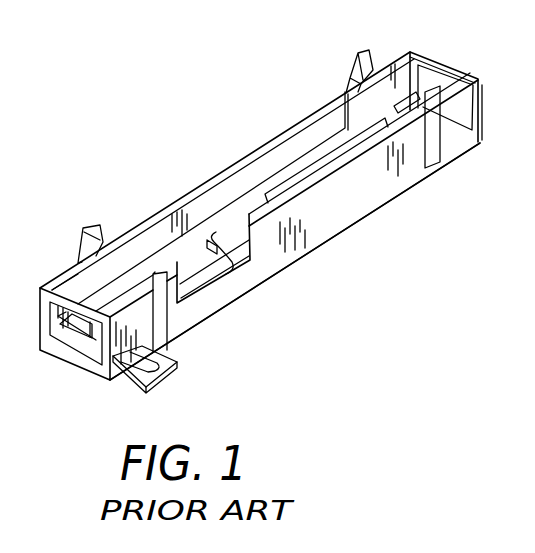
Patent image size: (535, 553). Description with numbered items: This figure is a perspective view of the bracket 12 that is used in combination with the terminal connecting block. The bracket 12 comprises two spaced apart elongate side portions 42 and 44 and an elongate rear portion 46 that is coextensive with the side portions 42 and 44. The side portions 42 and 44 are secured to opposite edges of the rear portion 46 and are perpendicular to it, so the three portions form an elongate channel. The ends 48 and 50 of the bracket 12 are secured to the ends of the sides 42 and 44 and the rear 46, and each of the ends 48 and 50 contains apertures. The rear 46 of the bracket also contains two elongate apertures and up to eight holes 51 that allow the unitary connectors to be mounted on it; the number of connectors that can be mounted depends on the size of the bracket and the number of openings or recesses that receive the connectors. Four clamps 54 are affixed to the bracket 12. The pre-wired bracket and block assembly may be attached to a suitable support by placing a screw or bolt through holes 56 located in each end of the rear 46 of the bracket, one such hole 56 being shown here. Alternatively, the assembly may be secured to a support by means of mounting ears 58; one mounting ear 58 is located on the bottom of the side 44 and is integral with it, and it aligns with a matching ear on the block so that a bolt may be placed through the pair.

The bracket 12 is at (242, 310).
The side portion 42 is at (154, 262).
The side portion 44 is at (356, 212).
The rear portion 46 is at (232, 262).
The end 48 is at (45, 352).
The end 50 is at (443, 70).
The holes 51 is at (231, 235).
The clamps 54 is at (99, 226).
The hole 56 is at (86, 342).
The mounting ear 58 is at (176, 370).